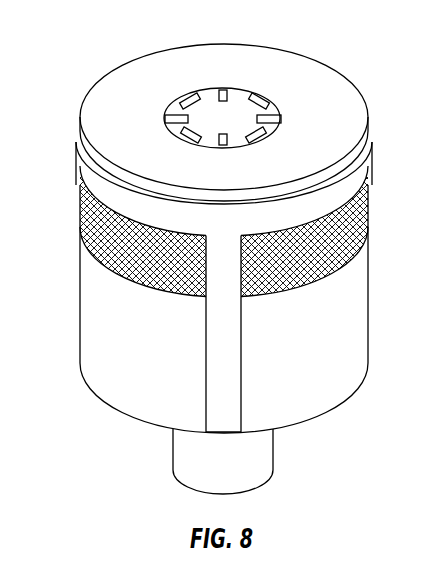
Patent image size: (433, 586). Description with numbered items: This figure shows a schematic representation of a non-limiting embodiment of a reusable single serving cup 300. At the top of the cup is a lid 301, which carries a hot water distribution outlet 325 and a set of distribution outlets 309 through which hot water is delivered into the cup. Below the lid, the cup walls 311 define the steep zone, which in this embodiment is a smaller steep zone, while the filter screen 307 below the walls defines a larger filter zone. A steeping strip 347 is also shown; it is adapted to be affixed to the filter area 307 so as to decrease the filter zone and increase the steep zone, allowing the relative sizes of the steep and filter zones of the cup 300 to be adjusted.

The single serving cup 300 is at (313, 43).
The lid 301 is at (123, 75).
The distribution outlets 309 is at (212, 123).
The hot water distribution outlet 325 is at (268, 100).
The cup walls 311 is at (348, 178).
The steeping strip 347 is at (364, 223).
The filter screen 307 is at (359, 313).